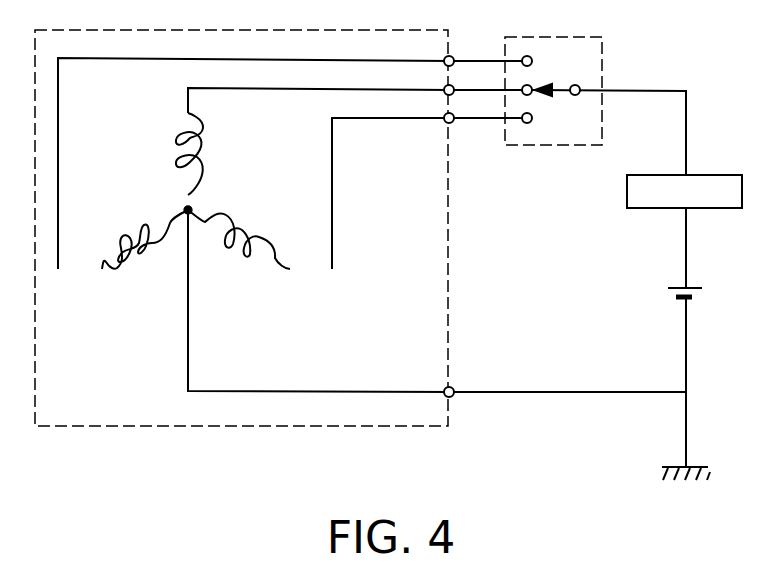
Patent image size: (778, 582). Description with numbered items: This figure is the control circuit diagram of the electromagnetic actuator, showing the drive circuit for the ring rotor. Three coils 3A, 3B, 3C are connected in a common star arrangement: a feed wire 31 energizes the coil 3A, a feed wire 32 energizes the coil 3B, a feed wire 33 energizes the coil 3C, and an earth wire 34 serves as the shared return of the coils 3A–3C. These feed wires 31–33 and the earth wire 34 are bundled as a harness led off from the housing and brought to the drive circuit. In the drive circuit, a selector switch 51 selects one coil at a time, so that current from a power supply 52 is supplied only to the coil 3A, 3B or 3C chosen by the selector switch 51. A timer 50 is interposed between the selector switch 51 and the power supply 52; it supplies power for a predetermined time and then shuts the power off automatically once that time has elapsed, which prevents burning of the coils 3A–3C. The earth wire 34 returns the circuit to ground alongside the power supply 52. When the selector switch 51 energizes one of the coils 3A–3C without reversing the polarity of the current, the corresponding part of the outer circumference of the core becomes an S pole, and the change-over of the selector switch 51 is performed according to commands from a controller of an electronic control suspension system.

The coil 3A is at (127, 268).
The coil 3B is at (203, 118).
The coil 3C is at (265, 228).
The feed wire 31 is at (452, 56).
The feed wire 32 is at (452, 85).
The feed wire 33 is at (452, 113).
The earth wire 34 is at (452, 387).
The timer 50 is at (725, 172).
The selector switch 51 is at (603, 40).
The power supply 52 is at (693, 283).